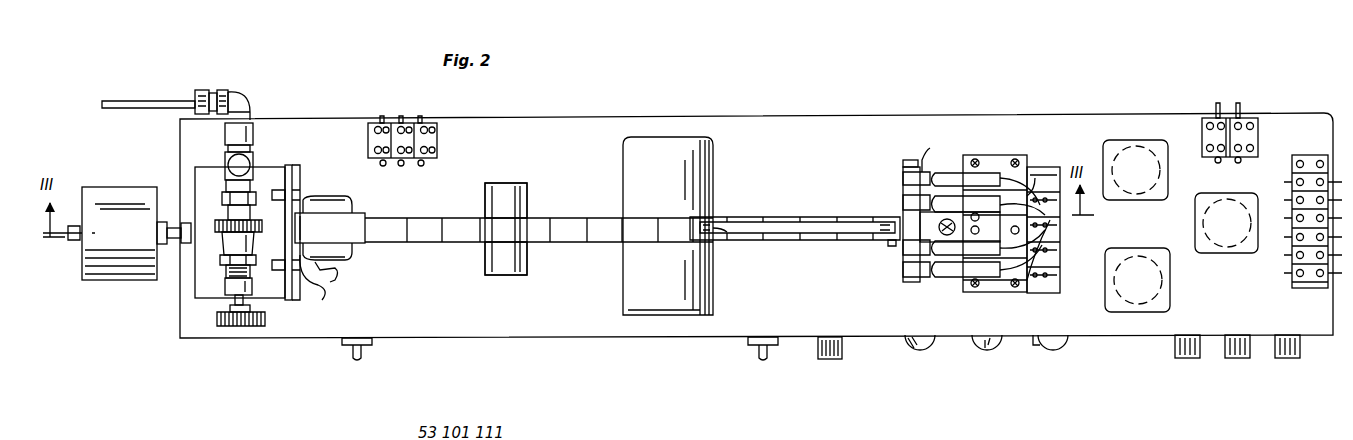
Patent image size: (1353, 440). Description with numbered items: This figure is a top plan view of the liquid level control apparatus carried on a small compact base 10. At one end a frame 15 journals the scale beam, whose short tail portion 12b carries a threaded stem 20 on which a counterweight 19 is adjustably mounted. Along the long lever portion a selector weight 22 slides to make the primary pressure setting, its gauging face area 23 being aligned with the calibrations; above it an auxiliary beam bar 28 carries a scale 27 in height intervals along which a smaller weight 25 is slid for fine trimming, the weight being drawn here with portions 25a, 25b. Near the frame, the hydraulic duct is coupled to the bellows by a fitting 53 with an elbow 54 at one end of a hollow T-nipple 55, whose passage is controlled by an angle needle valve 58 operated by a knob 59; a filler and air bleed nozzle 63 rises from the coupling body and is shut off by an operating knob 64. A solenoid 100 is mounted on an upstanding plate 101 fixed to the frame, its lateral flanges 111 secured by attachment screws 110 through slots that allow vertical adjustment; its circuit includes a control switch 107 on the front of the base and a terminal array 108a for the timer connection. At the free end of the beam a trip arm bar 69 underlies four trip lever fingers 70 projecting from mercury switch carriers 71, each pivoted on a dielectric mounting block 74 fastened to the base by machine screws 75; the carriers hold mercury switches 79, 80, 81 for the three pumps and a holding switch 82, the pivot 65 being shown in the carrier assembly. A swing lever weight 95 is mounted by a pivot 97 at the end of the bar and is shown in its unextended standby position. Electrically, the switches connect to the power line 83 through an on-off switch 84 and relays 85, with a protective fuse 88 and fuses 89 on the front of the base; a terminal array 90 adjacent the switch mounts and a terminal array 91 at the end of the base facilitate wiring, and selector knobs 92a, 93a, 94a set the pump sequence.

The base 10 is at (782, 116).
The tail portion 12b is at (908, 226).
The frame 15 is at (208, 303).
The counterweight 19 is at (125, 187).
The threaded stem 20 is at (72, 242).
The selector weight 22 is at (630, 290).
The gauging face area 23 is at (715, 246).
The smaller weight 25 is at (484, 190).
The lower bracket part 25a is at (490, 272).
The upper bracket part 25b is at (500, 190).
The scale 27 is at (555, 222).
The auxiliary beam bar 28 is at (435, 217).
The fitting 53 is at (260, 133).
The elbow 54 is at (238, 92).
The T-nipple 55 is at (267, 180).
The angle needle valve 58 is at (250, 300).
The knob 59 is at (237, 334).
The filler and air bleed nozzle 63 is at (228, 162).
The operating knob 64 is at (218, 222).
The pivot 65 is at (940, 222).
The trip arm bar 69 is at (905, 163).
The trip lever fingers 70 is at (918, 178).
The mercury switch carriers 71 is at (1010, 186).
The dielectric mounting block 74 is at (1003, 285).
The machine screws 75 is at (975, 288).
The mercury switch 79 is at (946, 278).
The mercury switch 80 is at (945, 258).
The mercury switch 81 is at (965, 196).
The holding switch 82 is at (950, 175).
The power line 83 is at (1240, 102).
The on-off switch 84 is at (765, 354).
The relays 85 is at (1155, 198).
The protective fuse 88 is at (840, 358).
The fuses 89 is at (1283, 355).
The terminal array 90 is at (1042, 165).
The electrical terminal array 91 is at (1306, 155).
The knob 92a is at (920, 351).
The knob 93a is at (988, 351).
The knob 94a is at (1062, 352).
The lever weight 95 is at (790, 220).
The pivot 97 is at (888, 244).
The solenoid 100 is at (345, 228).
The mounting plate 101 is at (292, 160).
The on-off control switch 107 is at (366, 352).
The terminal array 108a is at (392, 115).
The attachment screws 110 is at (305, 200).
The lateral flanges 111 is at (296, 190).